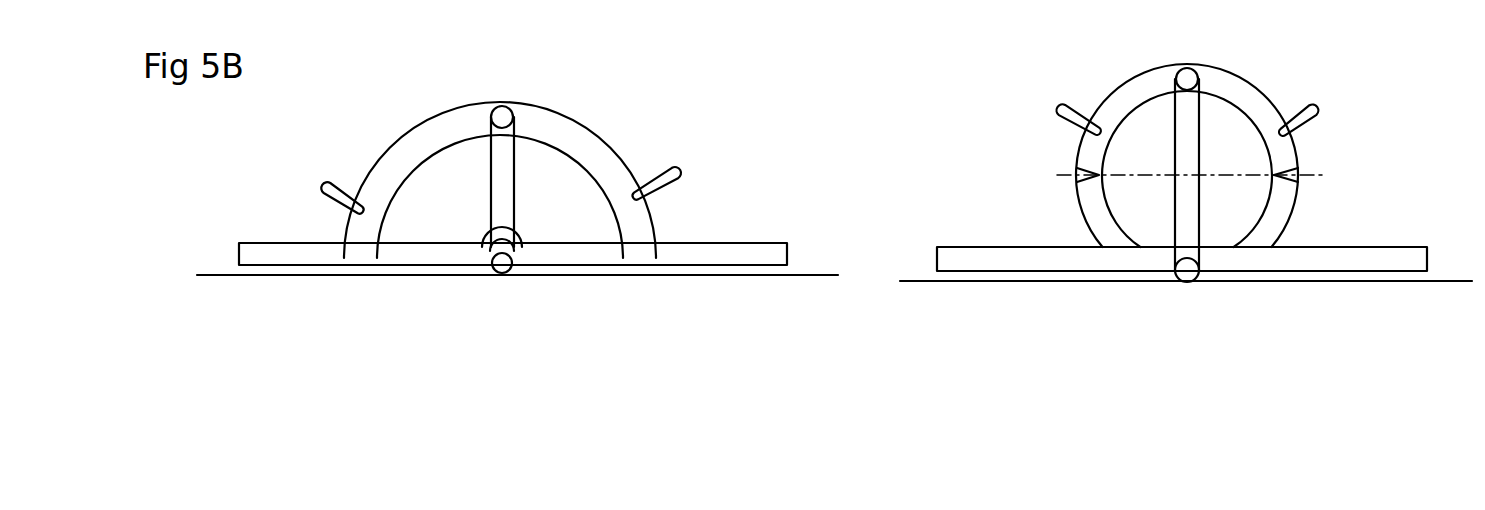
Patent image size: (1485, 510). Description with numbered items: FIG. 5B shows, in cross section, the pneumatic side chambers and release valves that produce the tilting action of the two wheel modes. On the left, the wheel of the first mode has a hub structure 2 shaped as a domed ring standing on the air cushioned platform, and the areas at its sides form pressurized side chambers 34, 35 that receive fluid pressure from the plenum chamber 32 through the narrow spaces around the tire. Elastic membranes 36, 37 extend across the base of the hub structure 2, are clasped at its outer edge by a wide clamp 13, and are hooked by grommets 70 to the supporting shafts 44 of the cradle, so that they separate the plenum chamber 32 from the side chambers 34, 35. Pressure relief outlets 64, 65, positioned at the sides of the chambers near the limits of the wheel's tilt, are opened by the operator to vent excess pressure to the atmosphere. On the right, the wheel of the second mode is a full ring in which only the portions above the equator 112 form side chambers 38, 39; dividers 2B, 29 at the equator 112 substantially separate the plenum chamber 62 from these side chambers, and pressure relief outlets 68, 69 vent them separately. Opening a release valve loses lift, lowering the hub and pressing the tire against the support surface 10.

The hub structure 2 is at (478, 178).
The side chamber 34 is at (424, 157).
The side chamber 35 is at (585, 152).
The supporting shaft 44 is at (630, 153).
The pressure relief outlet 64 is at (280, 171).
The pressure relief outlet 65 is at (714, 155).
The wide clamp 13 is at (519, 225).
The plenum chamber 32 is at (500, 305).
The elastic membrane 36 is at (411, 291).
The elastic membrane 37 is at (597, 297).
The grommet 70 is at (548, 304).
The support surface 10 is at (908, 277).
The side chamber 38 is at (1151, 138).
The side chamber 39 is at (1233, 138).
The pressure relief outlet 68 is at (1004, 94).
The pressure relief outlet 69 is at (1350, 98).
The equator 112 is at (1107, 144).
The left wedge key 2B is at (1047, 200).
The divider 29 is at (1337, 203).
The plenum chamber 62 is at (1182, 299).